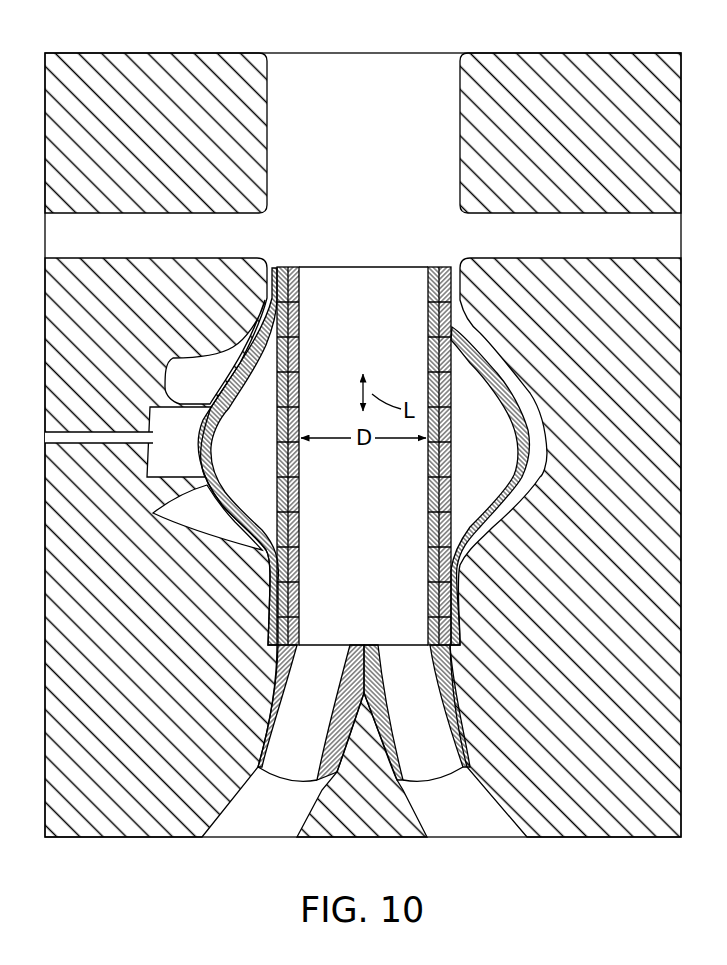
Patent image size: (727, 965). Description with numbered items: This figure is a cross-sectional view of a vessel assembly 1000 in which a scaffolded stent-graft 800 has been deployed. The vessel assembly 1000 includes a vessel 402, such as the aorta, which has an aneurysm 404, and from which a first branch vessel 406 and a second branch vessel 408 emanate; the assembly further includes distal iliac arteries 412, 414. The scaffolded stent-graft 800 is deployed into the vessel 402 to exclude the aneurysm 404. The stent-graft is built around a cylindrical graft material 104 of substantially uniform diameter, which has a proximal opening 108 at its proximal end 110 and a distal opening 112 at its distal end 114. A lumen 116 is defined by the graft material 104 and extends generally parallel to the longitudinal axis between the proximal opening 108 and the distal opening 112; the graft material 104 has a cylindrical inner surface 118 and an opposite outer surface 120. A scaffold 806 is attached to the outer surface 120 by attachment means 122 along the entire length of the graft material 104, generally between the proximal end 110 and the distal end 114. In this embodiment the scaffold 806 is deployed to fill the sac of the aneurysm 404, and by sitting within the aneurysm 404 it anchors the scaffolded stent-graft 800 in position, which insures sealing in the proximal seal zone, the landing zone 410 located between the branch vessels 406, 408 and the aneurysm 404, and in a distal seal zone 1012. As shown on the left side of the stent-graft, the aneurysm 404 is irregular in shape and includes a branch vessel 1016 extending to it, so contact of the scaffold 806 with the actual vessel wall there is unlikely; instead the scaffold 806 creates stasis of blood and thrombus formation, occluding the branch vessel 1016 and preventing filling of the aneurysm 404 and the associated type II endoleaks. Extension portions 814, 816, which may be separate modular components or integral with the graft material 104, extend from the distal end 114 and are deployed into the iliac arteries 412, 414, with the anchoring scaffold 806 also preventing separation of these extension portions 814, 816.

The vessel assembly 1000 is at (104, 43).
The vessel 402 is at (382, 151).
The first branch vessel 406 is at (175, 247).
The second branch vessel 408 is at (591, 247).
The scaffolded stent-graft 800 is at (333, 256).
The proximal opening 108 is at (364, 217).
The proximal end 110 is at (421, 266).
The landing zone 410 is at (470, 270).
The attachment means 122 is at (301, 309).
The inner surface 118 is at (300, 363).
The aneurysm 404 is at (208, 363).
The outer surface 120 is at (276, 436).
The lumen 116 is at (383, 486).
The scaffold 806 is at (536, 455).
The branch vessel 1016 is at (123, 445).
The graft material 104 is at (429, 527).
The distal seal zone 1012 is at (468, 582).
The distal opening 112 is at (313, 629).
The distal end 114 is at (372, 644).
The extension portion 814 is at (273, 712).
The extension portion 816 is at (453, 712).
The distal iliac artery 412 is at (271, 826).
The distal iliac artery 414 is at (468, 826).